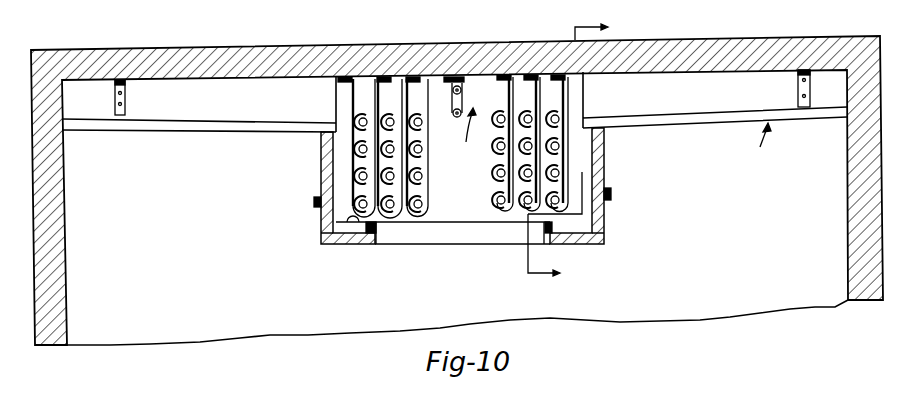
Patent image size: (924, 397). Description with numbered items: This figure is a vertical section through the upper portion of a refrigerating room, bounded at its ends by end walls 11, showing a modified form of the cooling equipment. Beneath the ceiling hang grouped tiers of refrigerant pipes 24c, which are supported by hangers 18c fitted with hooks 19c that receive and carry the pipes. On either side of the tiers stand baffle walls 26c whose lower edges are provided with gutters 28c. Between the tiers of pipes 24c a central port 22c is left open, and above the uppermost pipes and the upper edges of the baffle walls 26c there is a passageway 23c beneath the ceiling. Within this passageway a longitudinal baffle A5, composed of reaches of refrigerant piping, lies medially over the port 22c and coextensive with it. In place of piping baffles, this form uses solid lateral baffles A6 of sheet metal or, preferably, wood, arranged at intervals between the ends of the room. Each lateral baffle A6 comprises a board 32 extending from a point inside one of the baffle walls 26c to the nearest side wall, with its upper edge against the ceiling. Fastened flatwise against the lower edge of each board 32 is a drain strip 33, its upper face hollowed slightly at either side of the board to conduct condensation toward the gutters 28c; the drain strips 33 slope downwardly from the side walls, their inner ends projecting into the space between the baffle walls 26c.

The end walls 11 is at (578, 151).
The hangers 18c is at (446, 176).
The hooks 19c is at (496, 180).
The central port 22c is at (447, 198).
The passageway 23c is at (490, 96).
The pipes 24c is at (424, 204).
The baffle walls 26c is at (319, 181).
The gutters 28c is at (347, 245).
The board 32 is at (172, 107).
The drain strip 33 is at (235, 125).
The longitudinal baffle A5 is at (464, 138).
The solid lateral baffles A6 is at (757, 152).